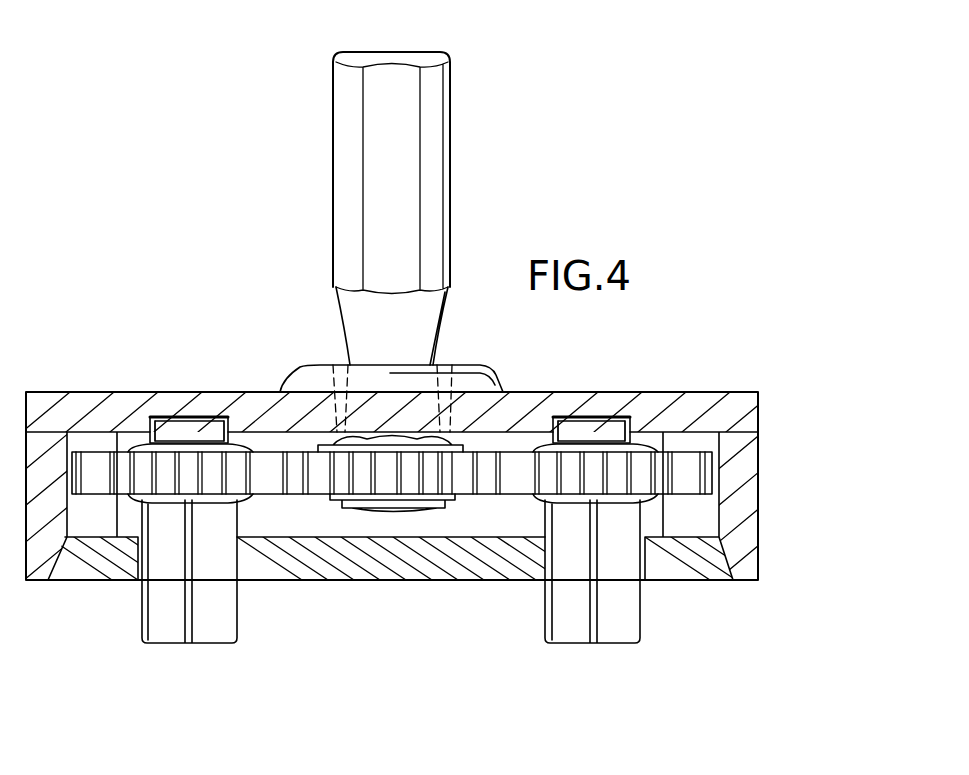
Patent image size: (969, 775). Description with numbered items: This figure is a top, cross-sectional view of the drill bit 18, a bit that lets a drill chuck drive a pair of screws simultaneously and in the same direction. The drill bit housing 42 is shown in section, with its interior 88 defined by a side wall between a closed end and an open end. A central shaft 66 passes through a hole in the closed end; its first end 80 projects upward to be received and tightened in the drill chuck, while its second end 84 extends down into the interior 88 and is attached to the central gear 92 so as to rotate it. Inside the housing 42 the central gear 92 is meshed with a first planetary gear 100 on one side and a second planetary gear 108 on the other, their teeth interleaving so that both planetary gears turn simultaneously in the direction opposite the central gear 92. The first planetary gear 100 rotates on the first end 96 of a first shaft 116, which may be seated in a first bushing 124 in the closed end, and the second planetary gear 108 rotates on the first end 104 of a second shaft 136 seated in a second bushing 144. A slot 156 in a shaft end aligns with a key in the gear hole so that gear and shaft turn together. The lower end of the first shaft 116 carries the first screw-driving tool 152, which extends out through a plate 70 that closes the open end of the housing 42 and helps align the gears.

The drill bit 18 is at (300, 178).
The drill bit housing 42 is at (690, 400).
The central shaft 66 is at (400, 330).
The plate 70 is at (388, 560).
The first end 80 is at (383, 50).
The second end 84 is at (430, 502).
The interior 88 is at (278, 520).
The central gear 92 is at (390, 480).
The first end 96 is at (175, 430).
The first planetary gear 100 is at (160, 478).
The first end 104 is at (602, 430).
The second planetary gear 108 is at (665, 468).
The first shaft 116 is at (210, 440).
The first bushing 124 is at (203, 425).
The second shaft 136 is at (620, 440).
The second bushing 144 is at (560, 420).
The first screw-driving tool 152 is at (205, 617).
The slot 156 is at (607, 617).